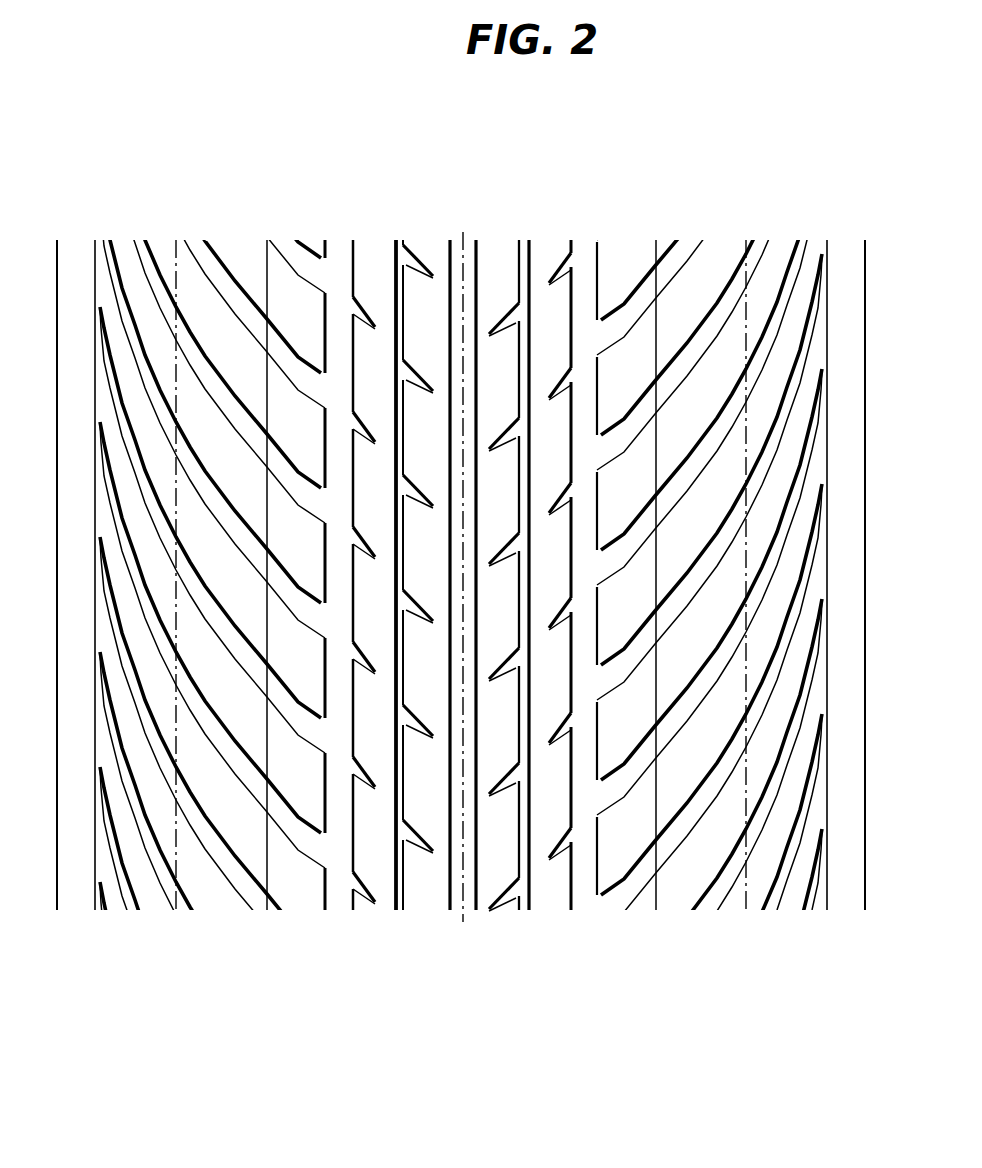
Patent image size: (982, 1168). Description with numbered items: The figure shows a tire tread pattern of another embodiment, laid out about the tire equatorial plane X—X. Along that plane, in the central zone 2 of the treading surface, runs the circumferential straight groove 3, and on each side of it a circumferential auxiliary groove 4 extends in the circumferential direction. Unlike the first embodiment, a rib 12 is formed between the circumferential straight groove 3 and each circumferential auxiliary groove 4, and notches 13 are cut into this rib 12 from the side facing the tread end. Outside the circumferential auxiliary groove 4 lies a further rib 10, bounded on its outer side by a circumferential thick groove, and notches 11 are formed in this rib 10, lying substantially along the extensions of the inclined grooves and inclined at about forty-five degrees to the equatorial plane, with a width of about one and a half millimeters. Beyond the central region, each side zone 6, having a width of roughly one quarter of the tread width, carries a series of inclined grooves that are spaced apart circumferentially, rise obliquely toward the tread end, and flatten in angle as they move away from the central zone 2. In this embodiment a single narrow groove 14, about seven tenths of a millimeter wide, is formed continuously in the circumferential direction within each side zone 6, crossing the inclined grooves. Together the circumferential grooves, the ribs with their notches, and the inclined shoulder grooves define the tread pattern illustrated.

The central zone 2 is at (590, 163).
The circumferential straight groove 3 is at (468, 912).
The circumferential auxiliary groove 4 is at (400, 912).
The side zone 6 is at (326, 163).
The rib 10 is at (372, 260).
The notches 11 is at (367, 448).
The rib 12 is at (428, 255).
The notches 13 is at (495, 437).
The narrow groove 14 is at (267, 383).